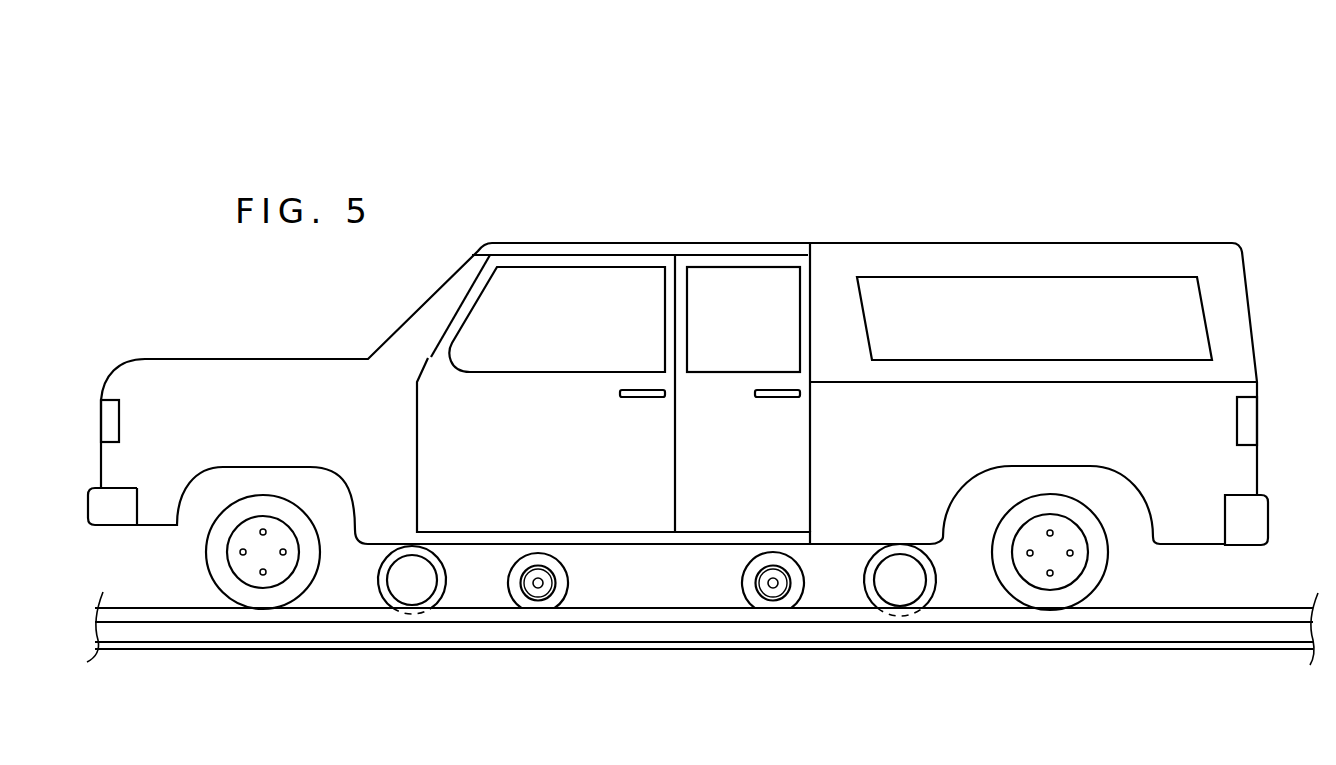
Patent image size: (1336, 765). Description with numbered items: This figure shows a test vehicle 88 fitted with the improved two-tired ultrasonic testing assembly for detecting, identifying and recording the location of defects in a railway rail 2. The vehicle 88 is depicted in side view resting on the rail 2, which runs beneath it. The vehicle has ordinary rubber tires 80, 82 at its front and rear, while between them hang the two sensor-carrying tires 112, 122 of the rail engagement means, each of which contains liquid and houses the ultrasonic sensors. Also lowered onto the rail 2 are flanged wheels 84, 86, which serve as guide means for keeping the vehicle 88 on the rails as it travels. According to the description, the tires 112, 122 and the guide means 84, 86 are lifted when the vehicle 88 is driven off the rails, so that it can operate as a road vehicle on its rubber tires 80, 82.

The rail 2 is at (655, 634).
The front road wheel 80 is at (217, 567).
The rear road wheel 82 is at (1097, 568).
The front guide wheel 84 is at (441, 580).
The rear guide wheel 86 is at (871, 580).
The vehicle 88 is at (742, 234).
The first tire 112 is at (565, 580).
The second tire 122 is at (745, 582).